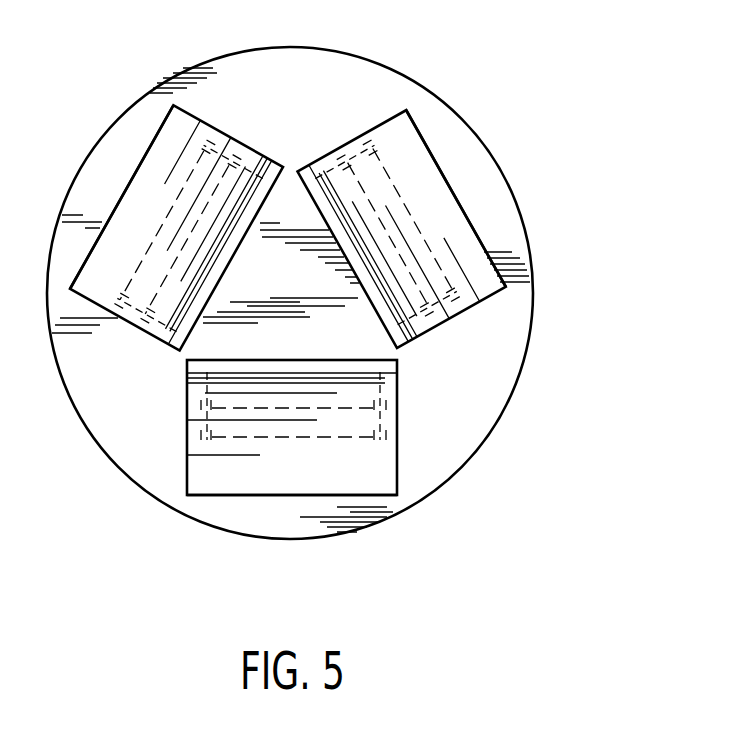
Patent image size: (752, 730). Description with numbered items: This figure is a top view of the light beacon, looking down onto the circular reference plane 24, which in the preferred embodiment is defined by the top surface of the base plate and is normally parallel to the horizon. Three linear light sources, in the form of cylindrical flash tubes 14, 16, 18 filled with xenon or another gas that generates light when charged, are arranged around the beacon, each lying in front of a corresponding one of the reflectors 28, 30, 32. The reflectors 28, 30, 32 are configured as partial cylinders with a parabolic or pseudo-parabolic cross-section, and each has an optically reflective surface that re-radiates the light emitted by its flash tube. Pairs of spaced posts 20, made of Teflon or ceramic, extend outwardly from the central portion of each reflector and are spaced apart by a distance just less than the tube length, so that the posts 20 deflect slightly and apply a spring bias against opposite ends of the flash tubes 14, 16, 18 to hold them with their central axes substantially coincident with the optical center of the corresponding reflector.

The flash tube 14 is at (403, 203).
The flash tube 16 is at (366, 437).
The flash tube 18 is at (158, 188).
The posts 20 is at (232, 138).
The reference plane 24 is at (570, 264).
The reflector 28 is at (470, 252).
The reflector 30 is at (228, 496).
The reflector 32 is at (158, 127).